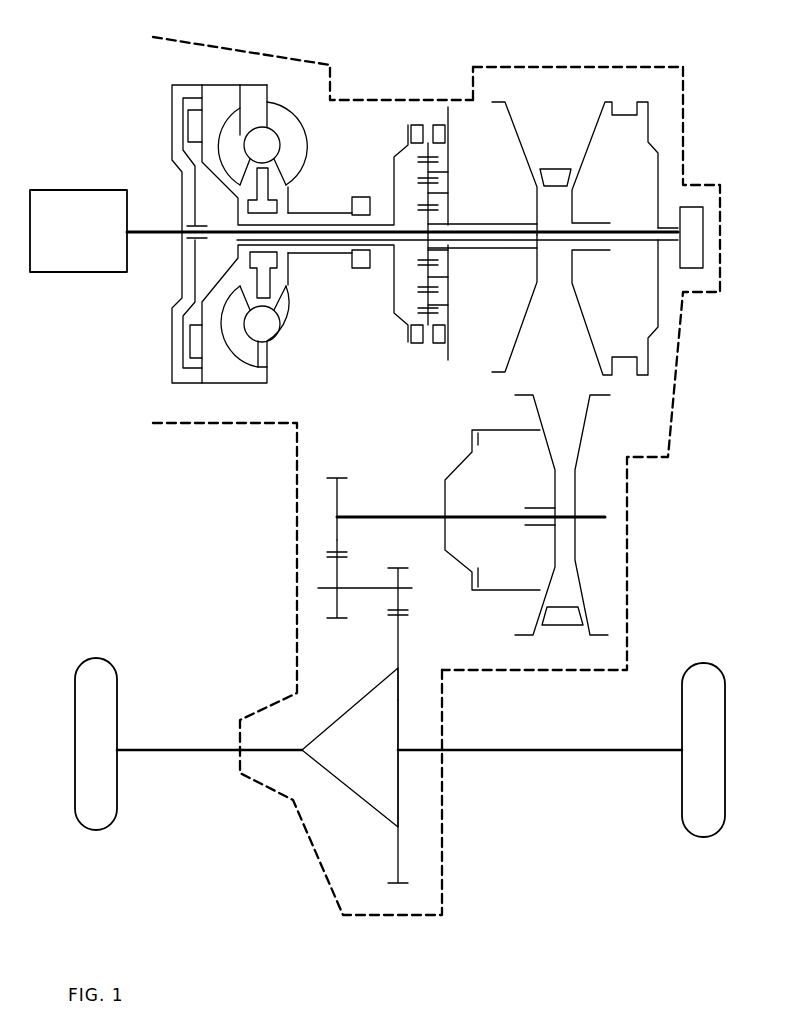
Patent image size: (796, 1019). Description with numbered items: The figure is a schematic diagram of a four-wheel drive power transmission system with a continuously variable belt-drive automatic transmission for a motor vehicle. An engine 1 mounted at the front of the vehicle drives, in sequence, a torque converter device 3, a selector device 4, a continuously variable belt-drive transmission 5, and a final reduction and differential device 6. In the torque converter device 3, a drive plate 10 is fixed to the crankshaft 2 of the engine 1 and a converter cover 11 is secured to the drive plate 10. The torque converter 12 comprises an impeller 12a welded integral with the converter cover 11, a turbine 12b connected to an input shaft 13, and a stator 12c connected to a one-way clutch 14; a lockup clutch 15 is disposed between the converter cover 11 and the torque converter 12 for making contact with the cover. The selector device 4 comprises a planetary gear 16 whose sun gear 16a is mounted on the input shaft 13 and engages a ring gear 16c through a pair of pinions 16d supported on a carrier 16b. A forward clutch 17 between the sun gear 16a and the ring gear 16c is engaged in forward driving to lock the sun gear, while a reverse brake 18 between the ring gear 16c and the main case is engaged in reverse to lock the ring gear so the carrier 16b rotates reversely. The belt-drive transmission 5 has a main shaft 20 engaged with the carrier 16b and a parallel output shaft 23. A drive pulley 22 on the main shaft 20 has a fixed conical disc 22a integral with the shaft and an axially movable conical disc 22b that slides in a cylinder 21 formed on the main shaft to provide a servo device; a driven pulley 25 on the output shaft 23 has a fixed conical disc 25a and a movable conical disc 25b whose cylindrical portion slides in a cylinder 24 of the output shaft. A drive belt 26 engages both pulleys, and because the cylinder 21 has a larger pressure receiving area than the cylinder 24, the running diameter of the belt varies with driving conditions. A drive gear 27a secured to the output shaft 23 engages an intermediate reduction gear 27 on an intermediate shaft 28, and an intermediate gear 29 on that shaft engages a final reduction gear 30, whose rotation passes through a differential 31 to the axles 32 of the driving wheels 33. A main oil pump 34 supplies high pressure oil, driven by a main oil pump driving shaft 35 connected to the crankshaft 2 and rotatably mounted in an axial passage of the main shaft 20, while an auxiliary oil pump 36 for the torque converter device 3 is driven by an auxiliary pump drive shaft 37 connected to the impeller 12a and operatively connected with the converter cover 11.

The engine 1 is at (105, 190).
The crankshaft 2 is at (163, 240).
The torque converter device 3 is at (275, 82).
The selector device 4 is at (384, 135).
The continuously variable belt-drive transmission 5 is at (571, 98).
The final reduction and differential device 6 is at (411, 725).
The drive plate 10 is at (180, 203).
The converter cover 11 is at (182, 143).
The torque converter 12 is at (268, 211).
The impeller 12a is at (283, 123).
The turbine 12b is at (243, 120).
The stator 12c is at (270, 292).
The input shaft 13 is at (378, 224).
The one-way clutch 14 is at (273, 260).
The lockup clutch 15 is at (190, 117).
The planetary gear 16 is at (456, 214).
The sun gear 16a is at (440, 222).
The carrier 16b is at (475, 190).
The ring gear 16c is at (428, 125).
The pinions 16d is at (440, 312).
The forward clutch 17 is at (418, 125).
The reverse brake 18 is at (462, 142).
The main shaft 20 is at (520, 240).
The cylinder 21 is at (620, 199).
The drive pulley 22 is at (550, 222).
The fixed conical disc 22a is at (513, 122).
The movable conical disc 22b is at (590, 348).
The output shaft 23 is at (422, 493).
The cylinder 24 is at (514, 488).
The driven pulley 25 is at (573, 508).
The fixed conical disc 25a is at (577, 570).
The movable conical disc 25b is at (540, 412).
The drive belt 26 is at (572, 158).
The intermediate reduction gear 27 is at (330, 620).
The drive gear 27a is at (333, 487).
The intermediate shaft 28 is at (362, 593).
The intermediate gear 29 is at (403, 543).
The final reduction gear 30 is at (393, 883).
The differential 31 is at (368, 777).
The axles 32 is at (195, 752).
The driving wheels 33 is at (108, 700).
The main oil pump 34 is at (692, 268).
The main oil pump driving shaft 35 is at (633, 242).
The auxiliary oil pump 36 is at (360, 268).
The auxiliary pump drive shaft 37 is at (330, 213).